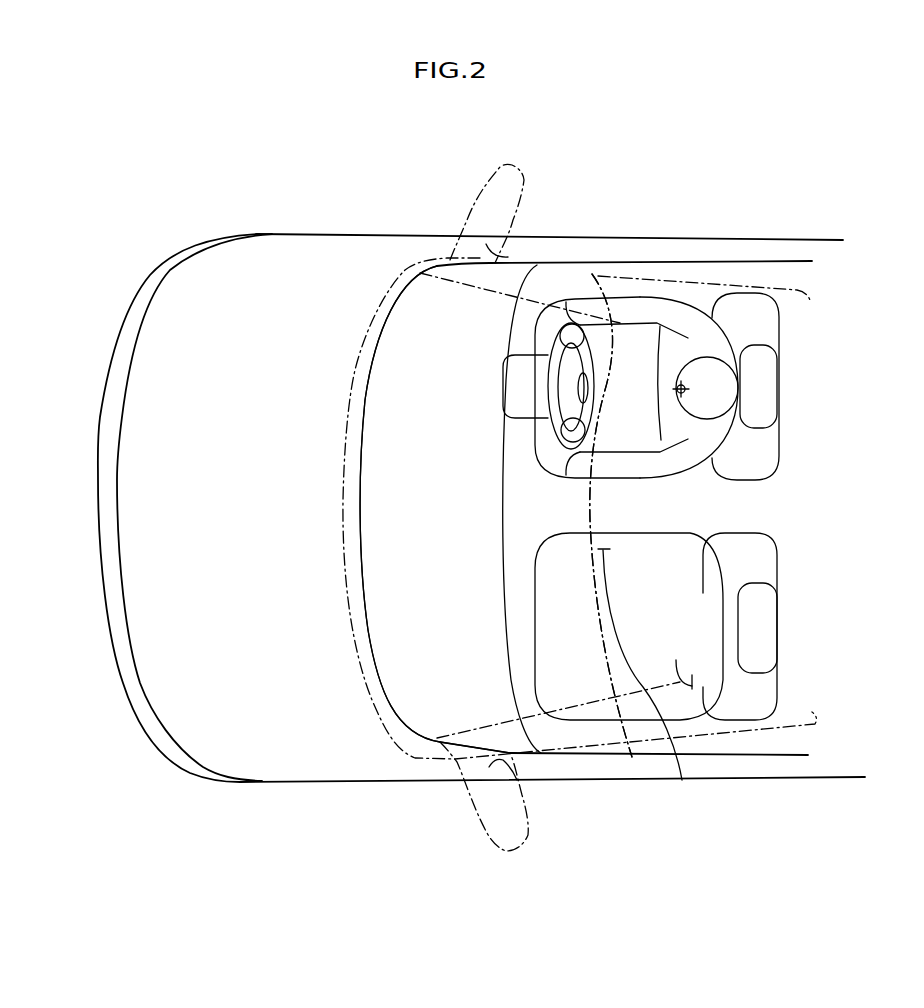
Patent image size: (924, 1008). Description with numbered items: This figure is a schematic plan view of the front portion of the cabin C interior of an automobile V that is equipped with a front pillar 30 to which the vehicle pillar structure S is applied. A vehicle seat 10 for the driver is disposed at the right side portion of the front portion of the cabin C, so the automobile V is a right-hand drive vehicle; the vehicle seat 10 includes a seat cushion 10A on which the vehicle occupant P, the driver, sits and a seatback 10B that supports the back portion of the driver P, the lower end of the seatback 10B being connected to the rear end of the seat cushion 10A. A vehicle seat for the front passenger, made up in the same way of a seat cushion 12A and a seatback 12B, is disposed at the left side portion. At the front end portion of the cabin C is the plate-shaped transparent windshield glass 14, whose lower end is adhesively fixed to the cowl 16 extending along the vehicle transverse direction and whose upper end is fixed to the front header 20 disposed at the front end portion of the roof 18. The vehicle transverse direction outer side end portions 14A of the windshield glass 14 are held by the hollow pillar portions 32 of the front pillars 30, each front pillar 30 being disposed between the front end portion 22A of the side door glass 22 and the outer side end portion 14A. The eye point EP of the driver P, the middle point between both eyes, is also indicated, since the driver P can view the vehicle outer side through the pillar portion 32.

The vehicle seat 10 is at (704, 408).
The seat cushion 10A is at (553, 478).
The seatback 10B is at (779, 453).
The seat cushion 12A is at (645, 533).
The seatback 12B is at (778, 577).
The windshield glass 14 is at (417, 717).
The vehicle transverse direction outer side end portion 14A is at (480, 291).
The cowl 16 is at (345, 496).
The roof 18 is at (693, 702).
The front header 20 is at (632, 757).
The side door glass 22 is at (697, 273).
The front end portion 22A is at (592, 272).
The front pillar 30 is at (554, 282).
The pillar portion 32 is at (600, 276).
The vehicle V is at (763, 240).
The vehicle pillar structure S is at (586, 253).
The vehicle occupant P is at (733, 331).
The eye point EP is at (685, 388).
The cabin C is at (768, 502).